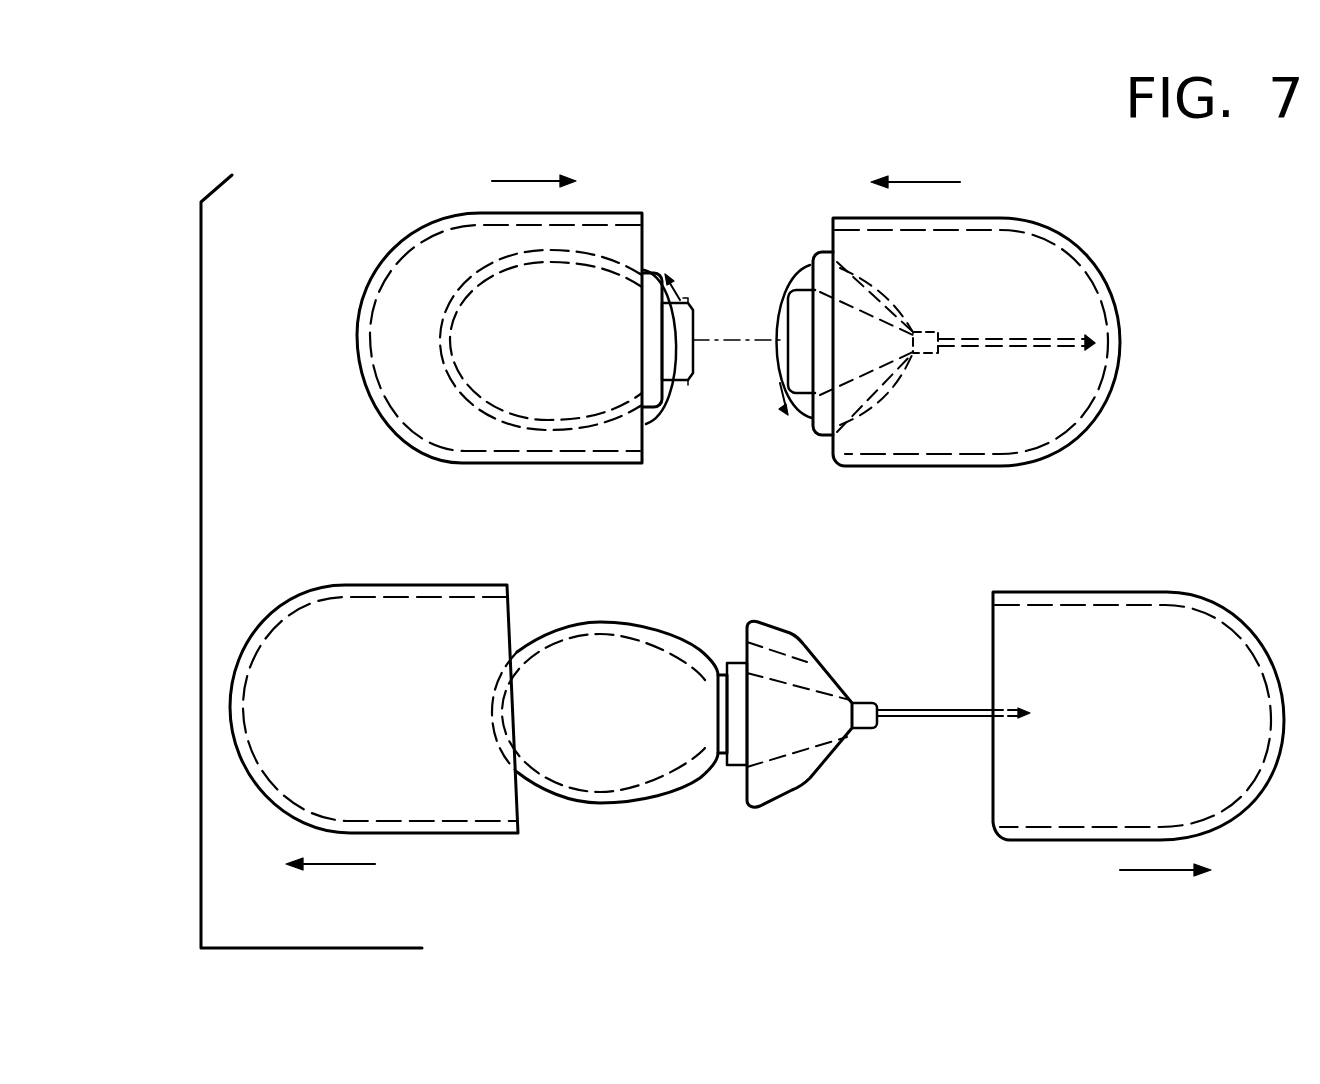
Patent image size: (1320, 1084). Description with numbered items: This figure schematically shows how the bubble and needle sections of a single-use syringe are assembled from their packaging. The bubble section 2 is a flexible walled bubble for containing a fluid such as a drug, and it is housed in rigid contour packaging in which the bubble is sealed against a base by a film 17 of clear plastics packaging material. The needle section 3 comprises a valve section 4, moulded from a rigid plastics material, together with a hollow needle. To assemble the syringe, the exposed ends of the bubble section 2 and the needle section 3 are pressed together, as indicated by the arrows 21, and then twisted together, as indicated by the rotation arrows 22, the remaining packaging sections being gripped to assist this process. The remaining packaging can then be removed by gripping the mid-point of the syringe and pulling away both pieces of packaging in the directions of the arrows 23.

The film 17 is at (425, 393).
The bubble section 2 is at (513, 317).
The needle section 3 is at (795, 703).
The valve section 4 is at (938, 718).
The direction of cap attachment 21 is at (520, 181).
The flange 22 is at (677, 405).
The direction of cap removal 23 is at (352, 866).